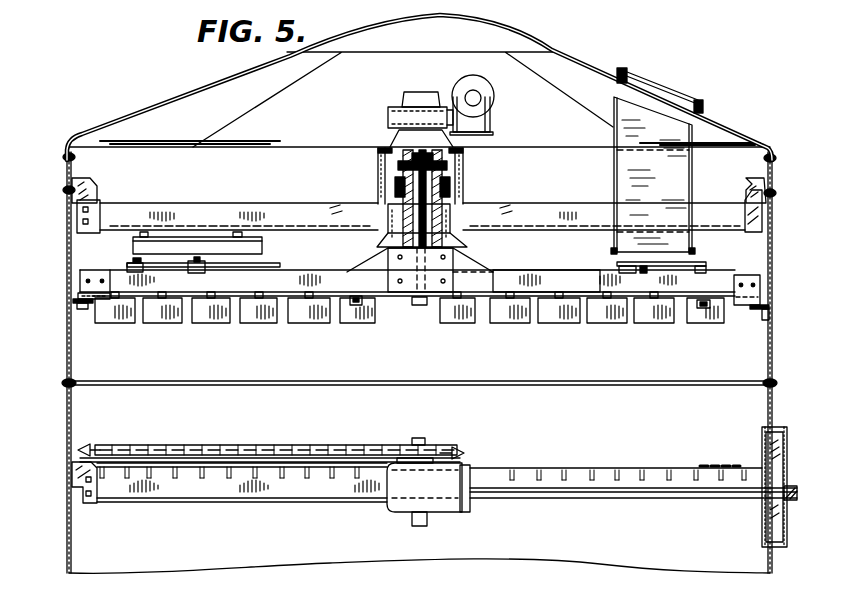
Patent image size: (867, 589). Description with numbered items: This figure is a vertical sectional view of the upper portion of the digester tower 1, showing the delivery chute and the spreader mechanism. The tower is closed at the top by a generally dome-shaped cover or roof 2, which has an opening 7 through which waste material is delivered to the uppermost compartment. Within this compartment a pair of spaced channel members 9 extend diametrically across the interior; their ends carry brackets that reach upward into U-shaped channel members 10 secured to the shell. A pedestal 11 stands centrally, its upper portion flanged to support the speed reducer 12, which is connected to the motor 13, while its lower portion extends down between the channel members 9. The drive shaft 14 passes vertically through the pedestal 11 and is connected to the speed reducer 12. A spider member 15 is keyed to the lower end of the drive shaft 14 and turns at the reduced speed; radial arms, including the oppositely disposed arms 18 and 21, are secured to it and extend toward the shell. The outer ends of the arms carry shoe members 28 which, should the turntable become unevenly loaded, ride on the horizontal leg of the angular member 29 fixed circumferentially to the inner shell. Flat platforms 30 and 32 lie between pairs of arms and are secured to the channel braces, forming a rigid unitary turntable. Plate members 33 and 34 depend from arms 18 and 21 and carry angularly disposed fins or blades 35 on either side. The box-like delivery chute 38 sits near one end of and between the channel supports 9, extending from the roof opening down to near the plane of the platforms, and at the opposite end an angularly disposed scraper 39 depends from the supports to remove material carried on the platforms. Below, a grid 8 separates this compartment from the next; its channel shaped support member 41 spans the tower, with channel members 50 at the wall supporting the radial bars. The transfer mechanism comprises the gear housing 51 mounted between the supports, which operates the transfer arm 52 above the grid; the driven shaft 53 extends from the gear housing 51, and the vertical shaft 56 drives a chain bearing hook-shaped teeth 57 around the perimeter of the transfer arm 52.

The digester tower 1 is at (65, 348).
The cover or roof 2 is at (165, 100).
The opening 7 is at (668, 88).
The grids 8 is at (573, 467).
The channel members 9 is at (333, 213).
The U-shaped channel members 10 is at (83, 178).
The pedestal 11 is at (459, 171).
The speed reducer 12 is at (403, 100).
The motor 13 is at (496, 92).
The drive shaft 14 is at (441, 205).
The spider member 15 is at (470, 267).
The radial arm 18 is at (530, 279).
The radial arm 21 is at (309, 271).
The shoe members 28 is at (78, 297).
The angular member 29 is at (79, 309).
The platform 30 is at (620, 268).
The platform 32 is at (232, 262).
The plate member 33 is at (567, 303).
The plate member 34 is at (267, 305).
The fins or blades 35 is at (128, 323).
The delivery chute 38 is at (613, 170).
The scraper 39 is at (133, 247).
The channel shaped support member 41 is at (170, 499).
The channel members 50 is at (72, 472).
The gear housing 51 is at (395, 508).
The transfer arm 52 is at (236, 444).
The driven shaft 53 is at (571, 496).
The vertical shaft 56 is at (420, 443).
The hook-shaped teeth 57 is at (87, 445).